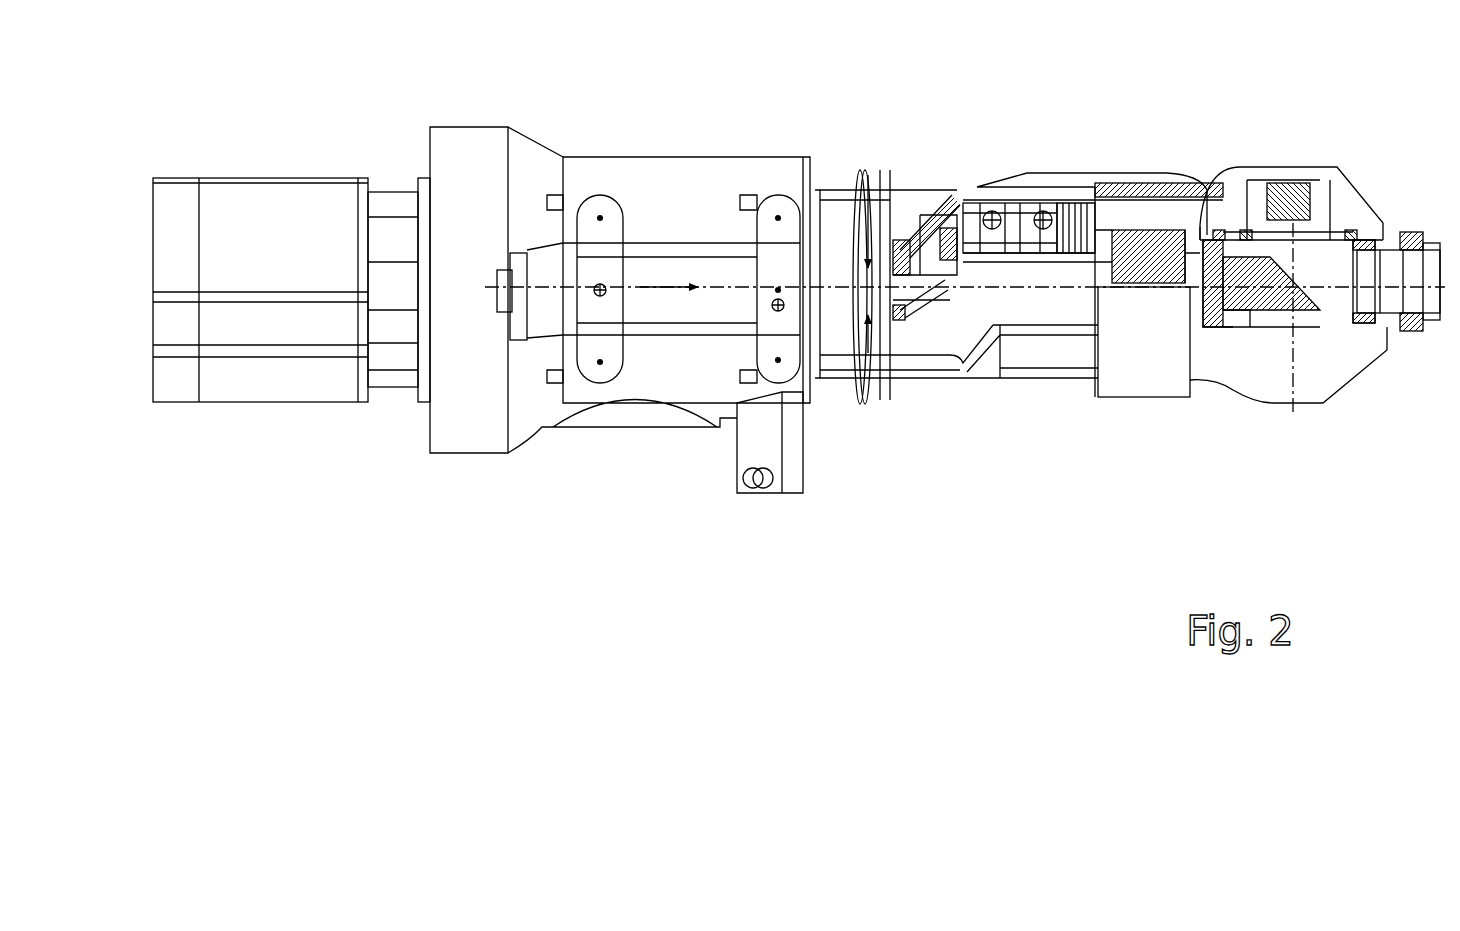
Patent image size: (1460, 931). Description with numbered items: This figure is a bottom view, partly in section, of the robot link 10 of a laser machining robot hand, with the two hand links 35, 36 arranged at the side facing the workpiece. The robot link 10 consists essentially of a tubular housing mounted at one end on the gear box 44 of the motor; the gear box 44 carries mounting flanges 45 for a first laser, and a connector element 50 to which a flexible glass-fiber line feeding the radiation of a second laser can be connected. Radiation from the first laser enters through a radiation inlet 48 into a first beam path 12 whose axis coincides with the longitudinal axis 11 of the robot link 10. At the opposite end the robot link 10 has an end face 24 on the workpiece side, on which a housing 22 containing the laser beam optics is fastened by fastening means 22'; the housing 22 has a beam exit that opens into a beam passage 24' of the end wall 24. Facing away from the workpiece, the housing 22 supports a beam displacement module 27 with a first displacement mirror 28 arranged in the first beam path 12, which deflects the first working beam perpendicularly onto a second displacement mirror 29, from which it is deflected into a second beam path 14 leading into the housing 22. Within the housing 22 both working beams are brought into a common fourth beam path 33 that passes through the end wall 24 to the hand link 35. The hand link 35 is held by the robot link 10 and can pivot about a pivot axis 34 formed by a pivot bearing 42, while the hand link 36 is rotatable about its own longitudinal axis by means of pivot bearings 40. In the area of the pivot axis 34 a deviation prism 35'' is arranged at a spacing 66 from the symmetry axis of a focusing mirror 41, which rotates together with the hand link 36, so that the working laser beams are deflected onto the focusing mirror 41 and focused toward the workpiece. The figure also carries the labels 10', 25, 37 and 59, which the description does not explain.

The robot link 10 is at (822, 315).
The flow direction 10' is at (816, 206).
The longitudinal axis 11 is at (640, 290).
The first beam path 12 is at (667, 292).
The second beam path 14 is at (935, 210).
The housing 22 is at (1097, 354).
The fastening means 22' is at (1144, 340).
The end face 24 is at (1117, 140).
The beam passage 24' is at (1093, 148).
The bearing 25 is at (963, 207).
The beam displacement module 27 is at (876, 172).
The first displacement mirror 28 is at (920, 325).
The second displacement mirror 29 is at (928, 212).
The fourth beam path 33 is at (1174, 200).
The pivot axis 34 is at (1295, 405).
The hand link 35 is at (1291, 166).
The deviation prism 35'' is at (1303, 129).
The hand link 36 is at (1377, 337).
The motor 37 is at (263, 383).
The pivot bearings 40 is at (1383, 203).
The focusing mirror 41 is at (1254, 330).
The pivot bearing 42 is at (1354, 207).
The gear box 44 is at (450, 188).
The mounting flanges 45 is at (778, 215).
The radiation inlet 48 is at (495, 317).
The connector element 50 is at (750, 480).
The gap 59 is at (980, 232).
The spacing 66 is at (1190, 372).